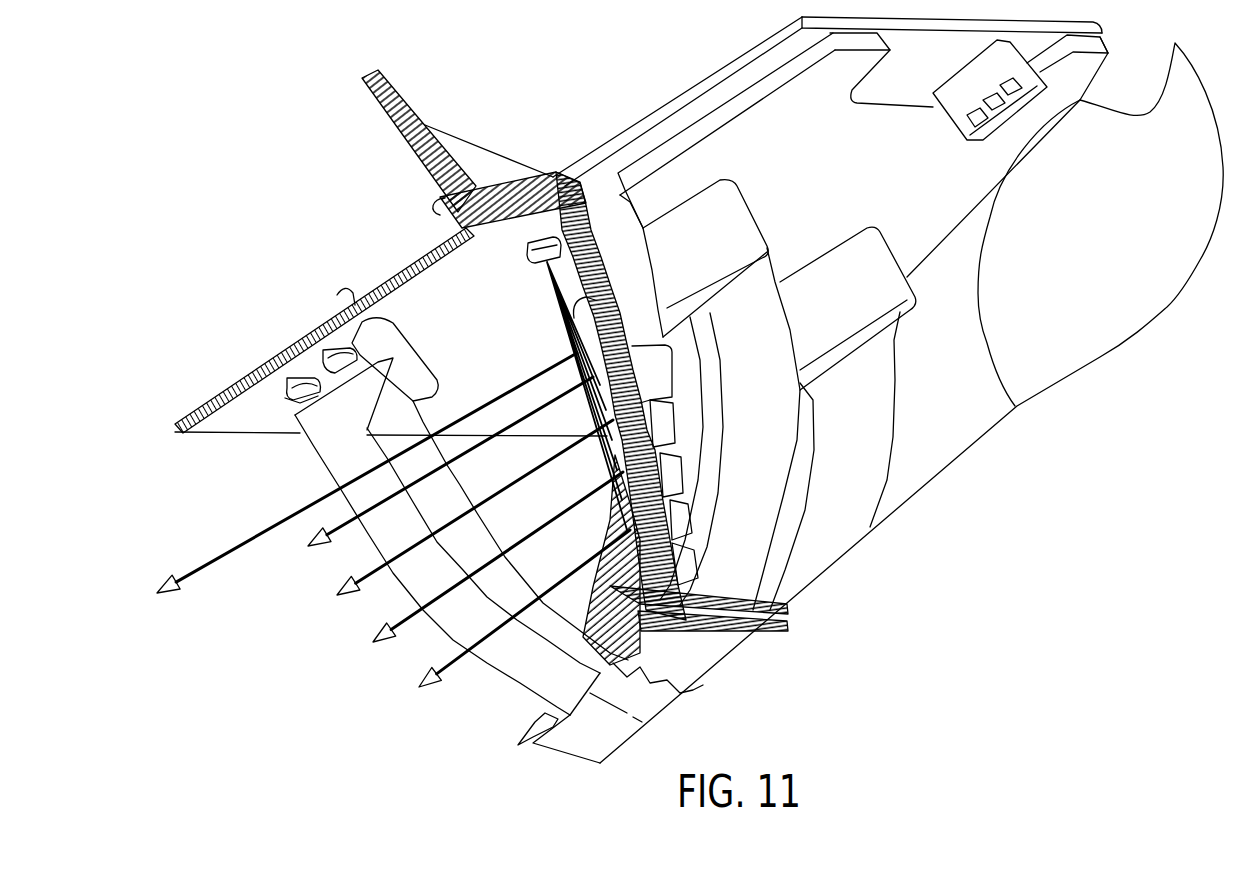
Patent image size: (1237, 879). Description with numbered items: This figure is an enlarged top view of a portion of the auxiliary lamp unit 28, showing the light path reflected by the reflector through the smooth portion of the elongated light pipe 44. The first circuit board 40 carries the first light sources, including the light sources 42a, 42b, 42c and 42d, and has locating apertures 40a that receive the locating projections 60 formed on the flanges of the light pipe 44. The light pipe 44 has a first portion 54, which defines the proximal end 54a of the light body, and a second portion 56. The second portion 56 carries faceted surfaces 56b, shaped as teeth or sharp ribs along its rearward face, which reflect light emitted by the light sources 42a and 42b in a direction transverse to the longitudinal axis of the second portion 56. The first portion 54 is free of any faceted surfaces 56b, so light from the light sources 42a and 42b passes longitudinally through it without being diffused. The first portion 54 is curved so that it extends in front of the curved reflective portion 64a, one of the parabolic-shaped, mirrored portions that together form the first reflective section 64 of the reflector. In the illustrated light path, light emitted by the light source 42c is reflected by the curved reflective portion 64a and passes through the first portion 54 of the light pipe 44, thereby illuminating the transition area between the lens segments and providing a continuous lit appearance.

The auxiliary lamp unit 28 is at (514, 118).
The first circuit board 40 is at (199, 400).
The locating apertures 40a is at (378, 320).
The light source 42a is at (322, 399).
The light source 42b is at (328, 350).
The light source 42c is at (537, 265).
The light source 42d is at (593, 313).
The elongated light pipe 44 is at (504, 682).
The first portion 54 is at (318, 470).
The proximal end 54a is at (290, 405).
The second portion 56 is at (597, 714).
The faceted surfaces 56b is at (687, 670).
The locating projection 60 is at (346, 293).
The first reflective section 64 is at (897, 407).
The curved reflective portion 64a is at (653, 376).